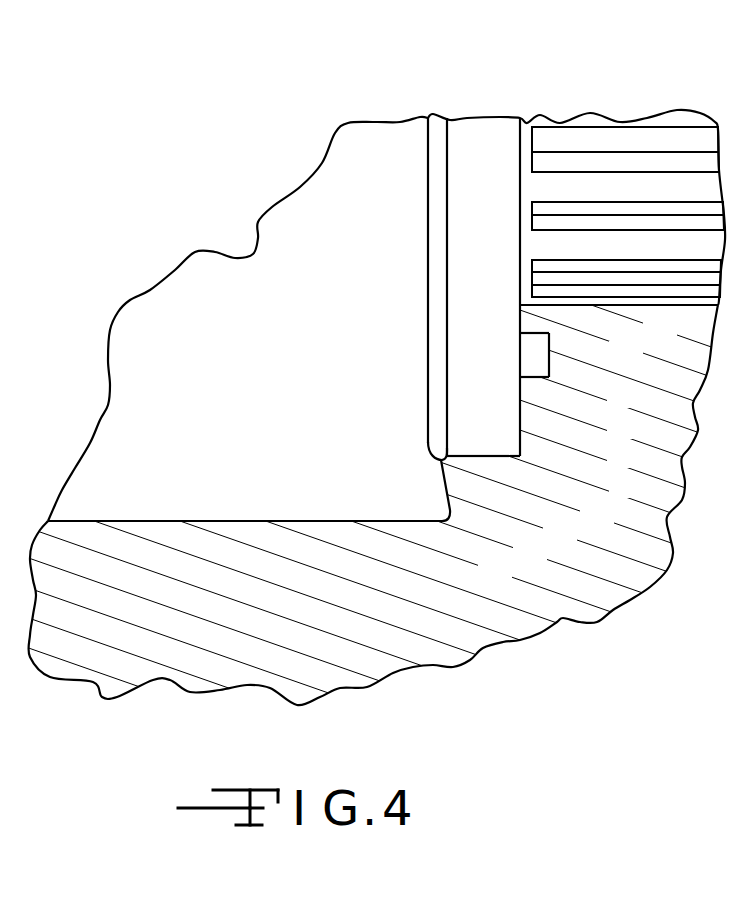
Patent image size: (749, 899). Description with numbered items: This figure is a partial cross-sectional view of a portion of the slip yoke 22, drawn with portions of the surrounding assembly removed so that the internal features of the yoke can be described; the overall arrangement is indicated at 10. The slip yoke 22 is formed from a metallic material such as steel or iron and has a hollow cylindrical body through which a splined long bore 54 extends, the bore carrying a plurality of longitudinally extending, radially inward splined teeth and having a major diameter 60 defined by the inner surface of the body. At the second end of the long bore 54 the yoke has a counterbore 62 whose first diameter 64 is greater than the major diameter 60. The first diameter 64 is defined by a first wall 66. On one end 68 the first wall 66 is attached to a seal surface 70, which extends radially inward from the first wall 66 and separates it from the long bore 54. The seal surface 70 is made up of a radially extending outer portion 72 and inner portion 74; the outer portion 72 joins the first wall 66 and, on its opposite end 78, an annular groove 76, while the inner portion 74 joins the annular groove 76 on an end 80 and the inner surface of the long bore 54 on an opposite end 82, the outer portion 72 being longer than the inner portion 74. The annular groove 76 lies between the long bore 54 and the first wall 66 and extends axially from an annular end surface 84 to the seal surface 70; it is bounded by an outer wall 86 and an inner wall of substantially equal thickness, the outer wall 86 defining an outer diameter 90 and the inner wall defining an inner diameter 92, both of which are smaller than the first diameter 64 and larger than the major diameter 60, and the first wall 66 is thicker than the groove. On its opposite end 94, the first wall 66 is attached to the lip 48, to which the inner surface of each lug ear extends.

The assembly 10 is at (739, 598).
The slip yoke 22 is at (293, 652).
The lip 48 is at (426, 410).
The long bore 54 is at (526, 124).
The major diameter 60 is at (523, 306).
The counterbore 62 is at (488, 457).
The first diameter 64 is at (462, 457).
The first wall 66 is at (502, 457).
The end 68 is at (520, 455).
The seal surface 70 is at (520, 420).
The outer portion 72 is at (520, 392).
The inner portion 74 is at (552, 333).
The annular groove 76 is at (551, 358).
The opposite end 78 is at (517, 378).
The end 80 is at (519, 331).
The opposite end 82 is at (521, 303).
The end surface 84 is at (551, 343).
The outer wall 86 is at (535, 352).
The outer diameter 90 is at (542, 334).
The inner diameter 92 is at (531, 343).
The opposite end 94 is at (428, 452).